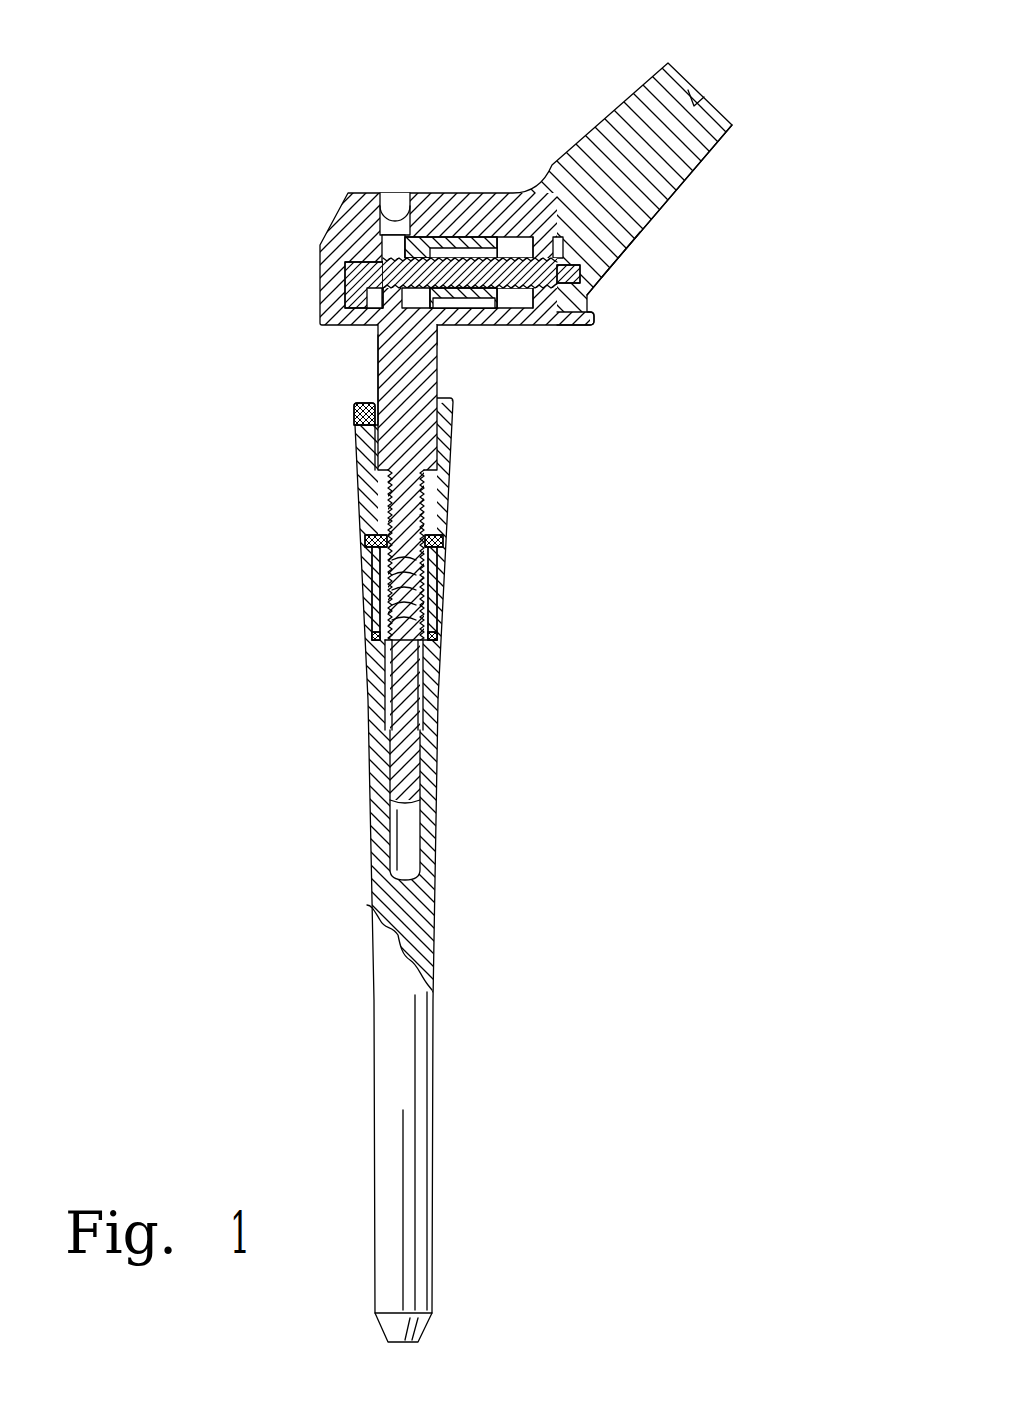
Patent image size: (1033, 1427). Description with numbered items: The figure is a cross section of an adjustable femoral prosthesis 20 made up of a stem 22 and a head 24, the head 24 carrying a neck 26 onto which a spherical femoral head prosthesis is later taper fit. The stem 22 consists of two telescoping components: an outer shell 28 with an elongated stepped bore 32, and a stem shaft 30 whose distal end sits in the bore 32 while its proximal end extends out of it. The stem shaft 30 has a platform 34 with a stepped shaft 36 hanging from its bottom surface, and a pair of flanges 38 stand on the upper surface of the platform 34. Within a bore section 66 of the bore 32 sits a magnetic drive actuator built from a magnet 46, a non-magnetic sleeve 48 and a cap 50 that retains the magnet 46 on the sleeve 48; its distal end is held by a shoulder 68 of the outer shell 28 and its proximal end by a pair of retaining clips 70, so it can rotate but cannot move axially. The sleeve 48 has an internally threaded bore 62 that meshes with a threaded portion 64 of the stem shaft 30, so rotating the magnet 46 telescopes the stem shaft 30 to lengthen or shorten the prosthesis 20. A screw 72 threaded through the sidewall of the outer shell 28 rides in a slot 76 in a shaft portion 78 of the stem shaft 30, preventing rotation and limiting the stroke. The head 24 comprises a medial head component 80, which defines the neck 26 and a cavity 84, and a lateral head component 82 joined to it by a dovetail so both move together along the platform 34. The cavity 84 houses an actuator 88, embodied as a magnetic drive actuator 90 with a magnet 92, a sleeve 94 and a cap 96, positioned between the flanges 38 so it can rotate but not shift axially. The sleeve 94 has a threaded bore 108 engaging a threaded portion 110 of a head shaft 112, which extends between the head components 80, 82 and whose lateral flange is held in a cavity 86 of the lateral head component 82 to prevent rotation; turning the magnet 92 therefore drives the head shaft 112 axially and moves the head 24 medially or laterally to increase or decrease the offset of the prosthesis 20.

The femoral prosthesis 20 is at (662, 46).
The stem 22 is at (494, 825).
The head 24 is at (699, 67).
The neck 26 is at (700, 147).
The outer shell 28 is at (435, 917).
The stem shaft 30 is at (443, 396).
The elongated bore 32 is at (432, 522).
The platform 34 is at (574, 328).
The shaft 36 is at (403, 748).
The flanges 38 is at (398, 228).
The magnet 46 is at (438, 628).
The sleeve 48 is at (437, 565).
The cap 50 is at (379, 643).
The threaded bore 62 is at (413, 592).
The threaded portion 64 is at (437, 682).
The bore section 66 is at (373, 622).
The shoulder 68 is at (428, 645).
The retaining clips 70 is at (366, 541).
The screw 72 is at (358, 418).
The slot 76 is at (371, 367).
The shaft portion 78 is at (438, 370).
The medial head component 80 is at (655, 228).
The lateral head component 82 is at (338, 250).
The cavity 84 is at (543, 237).
The cavity 86 is at (345, 297).
The actuator 88 is at (463, 216).
The magnetic drive actuator 90 is at (446, 220).
The magnet 92 is at (465, 330).
The sleeve 94 is at (502, 310).
The cap 96 is at (448, 314).
The threaded bore 108 is at (512, 230).
The threaded portion 110 is at (372, 240).
The head shaft 112 is at (598, 270).